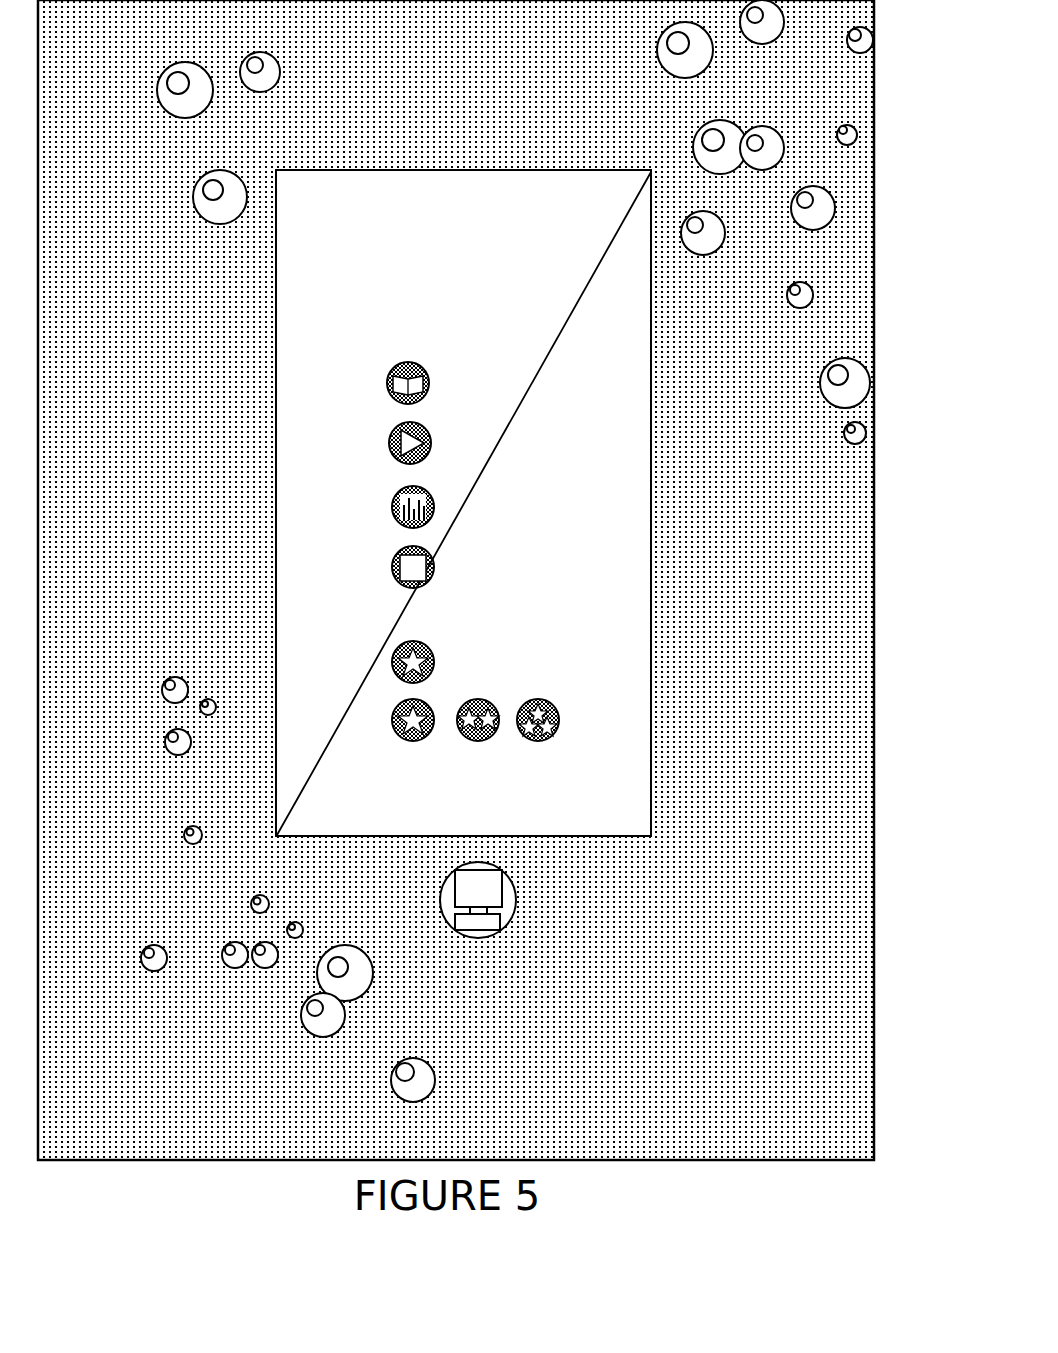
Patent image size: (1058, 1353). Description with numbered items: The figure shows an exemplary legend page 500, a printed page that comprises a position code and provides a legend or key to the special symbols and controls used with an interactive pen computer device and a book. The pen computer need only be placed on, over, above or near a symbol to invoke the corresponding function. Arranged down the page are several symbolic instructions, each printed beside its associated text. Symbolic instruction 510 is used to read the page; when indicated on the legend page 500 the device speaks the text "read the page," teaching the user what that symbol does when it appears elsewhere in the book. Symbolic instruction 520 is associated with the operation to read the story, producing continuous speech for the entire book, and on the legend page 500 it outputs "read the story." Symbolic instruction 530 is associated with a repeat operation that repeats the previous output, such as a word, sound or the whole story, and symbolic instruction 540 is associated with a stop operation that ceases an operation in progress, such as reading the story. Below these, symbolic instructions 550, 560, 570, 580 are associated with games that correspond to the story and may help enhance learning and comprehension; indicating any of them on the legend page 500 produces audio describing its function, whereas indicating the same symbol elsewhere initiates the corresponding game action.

The legend page 500 is at (100, 33).
The symbolic instruction 510 is at (392, 372).
The symbolic instruction 520 is at (393, 433).
The symbolic instruction 530 is at (396, 497).
The symbolic instruction 540 is at (397, 557).
The symbolic instruction 550 is at (398, 648).
The symbolic instruction 560 is at (380, 717).
The symbolic instruction 570 is at (490, 700).
The symbolic instruction 580 is at (558, 700).